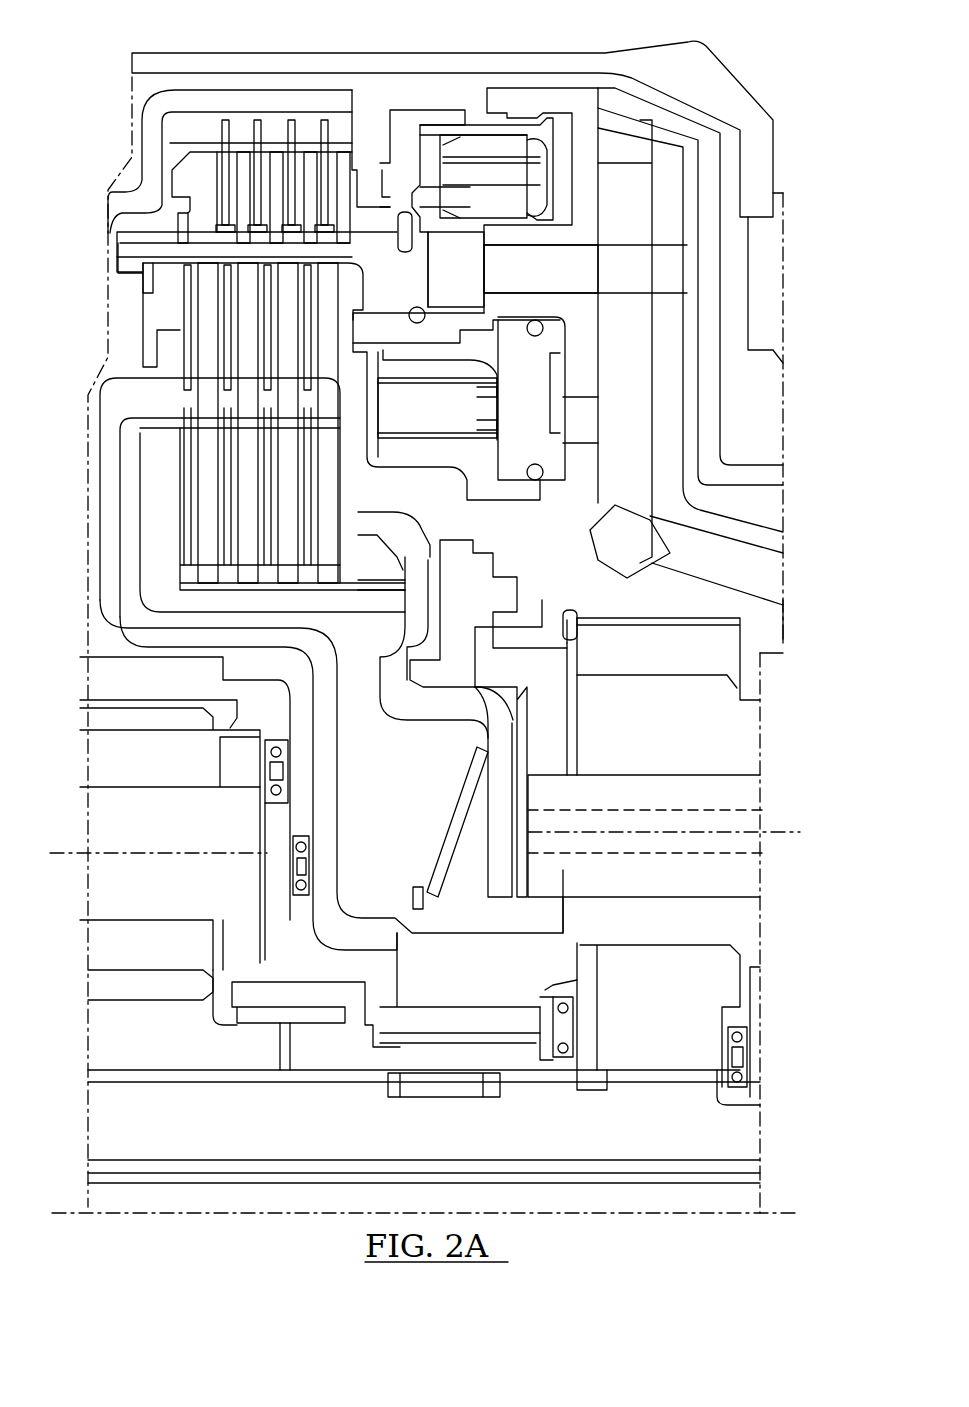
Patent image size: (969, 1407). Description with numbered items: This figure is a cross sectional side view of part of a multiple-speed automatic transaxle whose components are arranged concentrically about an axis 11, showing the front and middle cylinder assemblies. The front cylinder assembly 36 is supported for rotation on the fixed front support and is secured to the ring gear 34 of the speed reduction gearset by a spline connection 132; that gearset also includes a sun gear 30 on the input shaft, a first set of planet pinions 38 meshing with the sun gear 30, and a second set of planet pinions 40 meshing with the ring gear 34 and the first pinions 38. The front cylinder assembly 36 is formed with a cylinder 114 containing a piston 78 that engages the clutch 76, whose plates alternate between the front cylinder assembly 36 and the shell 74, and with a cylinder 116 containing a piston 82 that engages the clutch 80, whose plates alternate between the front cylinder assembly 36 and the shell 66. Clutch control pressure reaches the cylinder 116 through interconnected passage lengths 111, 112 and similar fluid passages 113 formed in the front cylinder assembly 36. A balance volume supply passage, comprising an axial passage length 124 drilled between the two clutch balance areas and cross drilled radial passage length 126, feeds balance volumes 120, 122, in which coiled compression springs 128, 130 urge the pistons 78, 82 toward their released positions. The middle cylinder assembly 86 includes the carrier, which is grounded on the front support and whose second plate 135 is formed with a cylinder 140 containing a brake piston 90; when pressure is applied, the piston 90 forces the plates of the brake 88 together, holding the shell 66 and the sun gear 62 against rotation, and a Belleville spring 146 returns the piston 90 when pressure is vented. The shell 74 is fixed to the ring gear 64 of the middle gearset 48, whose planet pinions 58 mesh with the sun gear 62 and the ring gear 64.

The axis 11 is at (563, 1215).
The sun gear 30 is at (672, 1031).
The ring gear 34 is at (672, 661).
The front cylinder assembly 36 is at (740, 528).
The first set of planet pinions 38 is at (593, 932).
The second set of planet pinions 40 is at (672, 746).
The middle gearset 48 is at (163, 1222).
The planet pinions 58 is at (152, 771).
The sun gear 62 is at (150, 1049).
The ring gear 64 is at (152, 694).
The shell 66 is at (330, 770).
The shell 74 is at (150, 158).
The clutch 76 is at (362, 143).
The piston 78 is at (470, 128).
The clutch 80 is at (348, 291).
The piston 82 is at (541, 406).
The middle cylinder assembly 86 is at (395, 770).
The brake 88 is at (160, 471).
The brake piston 90 is at (500, 832).
The passage length 111 is at (716, 564).
The passage length 112 is at (652, 484).
The fluid passage 113 is at (586, 420).
The cylinder 114 is at (585, 148).
The cylinder 116 is at (568, 373).
The balance volume 120 is at (484, 224).
The balance volume 122 is at (452, 424).
The axial passage length 124 is at (559, 281).
The radial passage length 126 is at (482, 284).
The coiled compression spring 128 is at (510, 140).
The coiled compression spring 130 is at (422, 442).
The spline connection 132 is at (710, 618).
The second plate 135 is at (497, 915).
The cylinder 140 is at (515, 737).
The Belleville spring 146 is at (470, 856).